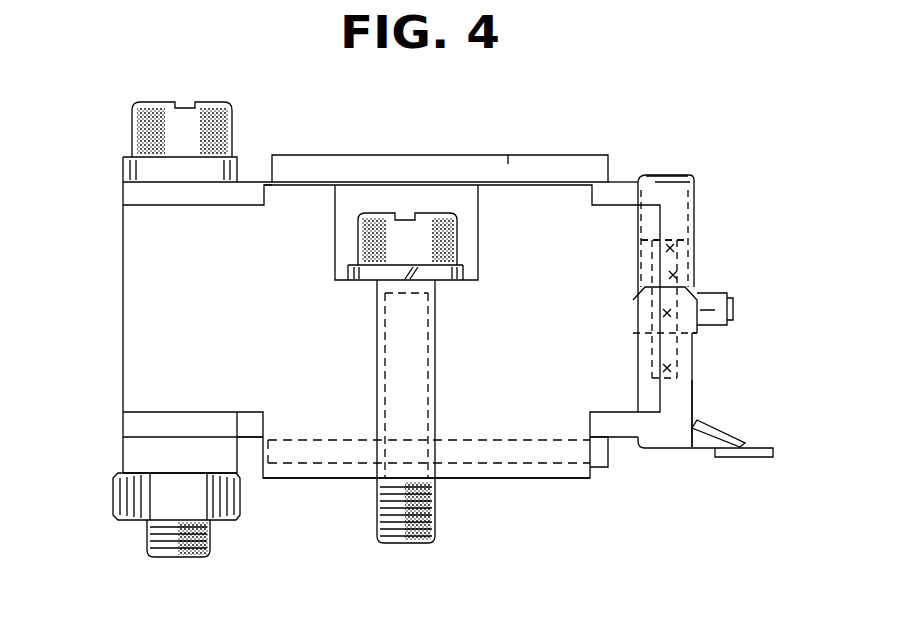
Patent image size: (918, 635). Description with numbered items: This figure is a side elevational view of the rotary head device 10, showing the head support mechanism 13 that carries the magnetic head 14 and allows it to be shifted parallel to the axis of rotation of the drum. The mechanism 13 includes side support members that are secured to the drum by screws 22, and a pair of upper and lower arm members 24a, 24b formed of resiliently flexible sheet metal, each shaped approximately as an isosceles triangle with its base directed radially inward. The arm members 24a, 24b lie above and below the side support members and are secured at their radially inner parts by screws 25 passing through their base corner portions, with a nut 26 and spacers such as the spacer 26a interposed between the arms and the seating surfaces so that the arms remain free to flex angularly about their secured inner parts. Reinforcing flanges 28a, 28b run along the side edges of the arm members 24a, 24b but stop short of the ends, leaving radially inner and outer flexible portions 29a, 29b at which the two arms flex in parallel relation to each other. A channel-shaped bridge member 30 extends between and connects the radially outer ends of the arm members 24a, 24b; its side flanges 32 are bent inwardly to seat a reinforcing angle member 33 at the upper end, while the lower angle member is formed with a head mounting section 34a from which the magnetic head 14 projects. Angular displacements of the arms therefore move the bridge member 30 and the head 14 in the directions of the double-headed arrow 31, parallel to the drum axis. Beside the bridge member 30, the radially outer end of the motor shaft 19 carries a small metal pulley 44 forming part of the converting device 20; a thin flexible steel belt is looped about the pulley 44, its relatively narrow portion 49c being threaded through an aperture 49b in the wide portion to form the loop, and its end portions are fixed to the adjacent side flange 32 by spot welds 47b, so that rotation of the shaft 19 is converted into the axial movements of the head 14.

The fastener assembly 10 is at (548, 83).
The head support mechanism 13 is at (118, 307).
The magnetic head 14 is at (749, 458).
The motor shaft 19 is at (735, 311).
The device for converting rotation of the motor shaft 20 is at (714, 337).
The screws 22 is at (428, 240).
The upper arm member 24a is at (633, 111).
The lower arm member 24b is at (616, 474).
The screws 25 is at (213, 116).
The nut 26 is at (130, 424).
The spacer 26a is at (130, 191).
The reinforcing flange 28a is at (551, 133).
The reinforcing flange 28b is at (598, 441).
The radially inner flexible portion 29a is at (257, 182).
The radially outer flexible portion 29b is at (250, 440).
The bridge member 30 is at (700, 190).
The double-headed arrow 31 is at (797, 376).
The side flange 32 is at (690, 396).
The reinforcing angle member 33 is at (681, 175).
The head mounting section 34a is at (737, 440).
The pulley 44 is at (698, 291).
The spot weld 47b is at (676, 246).
The aperture 49b is at (781, 258).
The relatively narrow portion 49c is at (776, 381).